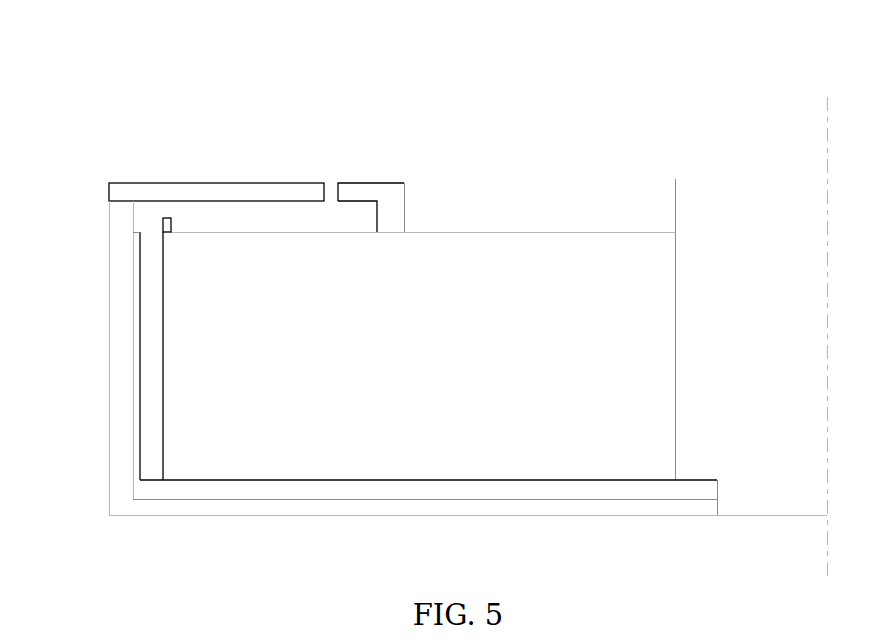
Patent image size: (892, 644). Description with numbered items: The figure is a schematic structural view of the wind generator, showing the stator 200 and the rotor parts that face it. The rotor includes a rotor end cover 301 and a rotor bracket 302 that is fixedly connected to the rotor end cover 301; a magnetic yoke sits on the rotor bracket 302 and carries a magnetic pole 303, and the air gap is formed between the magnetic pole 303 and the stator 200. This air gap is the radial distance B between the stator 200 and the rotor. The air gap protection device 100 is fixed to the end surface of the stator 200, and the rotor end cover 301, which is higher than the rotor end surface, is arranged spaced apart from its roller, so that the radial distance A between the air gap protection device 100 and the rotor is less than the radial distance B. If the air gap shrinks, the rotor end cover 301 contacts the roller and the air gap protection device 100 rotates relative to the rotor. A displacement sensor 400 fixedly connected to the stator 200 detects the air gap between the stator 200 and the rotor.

The air gap protection device 100 is at (365, 190).
The stator 200 is at (367, 443).
The rotor end cover 301 is at (222, 190).
The rotor bracket 302 is at (118, 502).
The magnetic pole 303 is at (138, 358).
The displacement sensor 400 is at (165, 223).
The radial distance between the air gap protection device and the rotor A is at (327, 190).
The radial distance between the stator and the rotor B is at (150, 279).